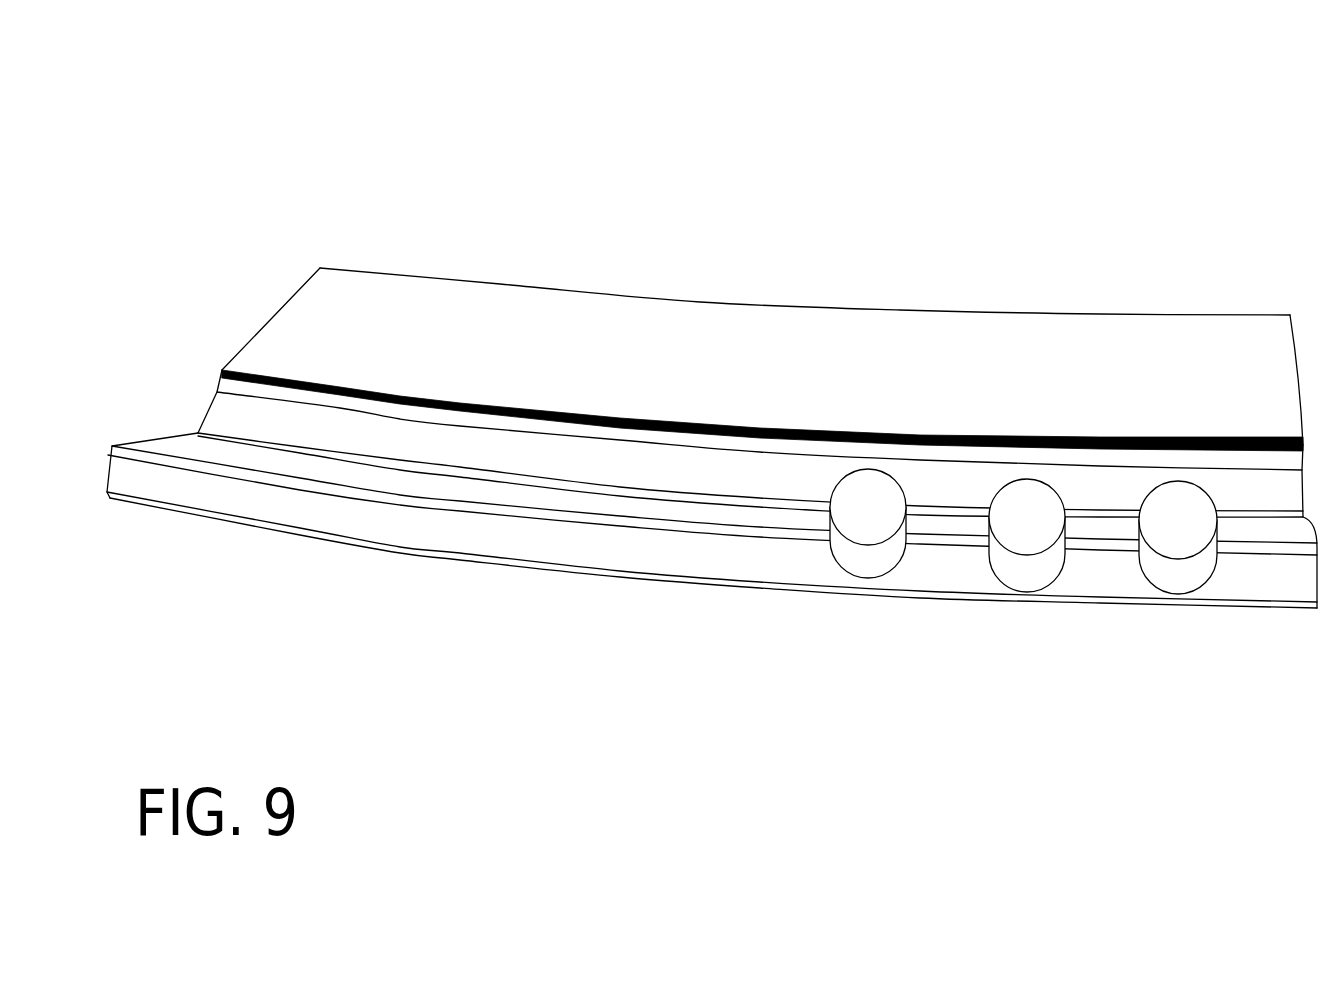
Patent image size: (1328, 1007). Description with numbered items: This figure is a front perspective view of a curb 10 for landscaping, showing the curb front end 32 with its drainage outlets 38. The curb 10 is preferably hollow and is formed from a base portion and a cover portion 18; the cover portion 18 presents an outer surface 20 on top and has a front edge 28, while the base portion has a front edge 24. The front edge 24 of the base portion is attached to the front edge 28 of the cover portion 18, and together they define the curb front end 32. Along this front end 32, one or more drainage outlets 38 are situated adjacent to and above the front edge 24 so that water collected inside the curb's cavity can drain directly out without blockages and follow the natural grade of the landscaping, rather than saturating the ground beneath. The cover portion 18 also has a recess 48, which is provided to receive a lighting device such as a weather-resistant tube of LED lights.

The curb 10 is at (228, 175).
The cover portion 18 is at (600, 323).
The outer surface 20 is at (430, 295).
The front edge 24 is at (705, 572).
The front edge 28 is at (323, 515).
The curb front end 32 is at (537, 558).
The drainage outlets 38 is at (860, 556).
The recess 48 is at (250, 375).